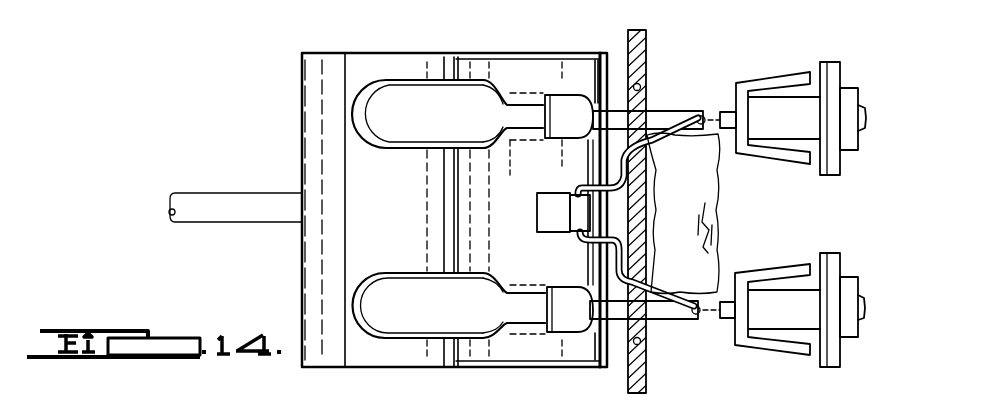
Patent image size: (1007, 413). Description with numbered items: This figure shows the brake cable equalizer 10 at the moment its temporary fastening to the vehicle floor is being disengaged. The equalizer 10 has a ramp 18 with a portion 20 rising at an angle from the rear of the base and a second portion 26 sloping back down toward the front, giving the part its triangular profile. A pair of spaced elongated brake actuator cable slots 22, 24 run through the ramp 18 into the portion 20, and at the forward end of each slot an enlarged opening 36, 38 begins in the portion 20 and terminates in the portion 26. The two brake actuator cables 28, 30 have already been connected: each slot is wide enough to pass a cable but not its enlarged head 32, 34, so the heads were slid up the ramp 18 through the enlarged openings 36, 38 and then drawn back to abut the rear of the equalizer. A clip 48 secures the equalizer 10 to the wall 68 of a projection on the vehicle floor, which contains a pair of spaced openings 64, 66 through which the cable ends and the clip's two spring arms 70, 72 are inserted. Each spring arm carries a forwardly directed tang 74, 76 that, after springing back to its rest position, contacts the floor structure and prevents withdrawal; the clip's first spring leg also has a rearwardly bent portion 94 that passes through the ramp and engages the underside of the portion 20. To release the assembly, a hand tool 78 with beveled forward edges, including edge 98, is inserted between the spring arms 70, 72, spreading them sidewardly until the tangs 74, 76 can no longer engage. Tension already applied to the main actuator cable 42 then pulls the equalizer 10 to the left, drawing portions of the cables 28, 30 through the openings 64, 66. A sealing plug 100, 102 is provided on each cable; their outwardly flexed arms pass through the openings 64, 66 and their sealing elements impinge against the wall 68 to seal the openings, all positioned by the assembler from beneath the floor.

The brake cable equalizer 10 is at (475, 42).
The ramp 18 is at (333, 50).
The ramp portion 20 is at (511, 65).
The elongated brake actuator cable slot 22 is at (567, 326).
The elongated brake actuator cable slot 24 is at (572, 108).
The second ramp portion 26 is at (385, 62).
The brake actuator cable 28 is at (695, 321).
The brake actuator cable 30 is at (657, 112).
The enlarged head 32 is at (518, 328).
The enlarged head 34 is at (512, 168).
The enlarged opening 36 is at (393, 274).
The enlarged opening 38 is at (405, 145).
The main actuator cable 42 is at (215, 195).
The clip 48 is at (576, 244).
The opening 64 is at (641, 85).
The opening 66 is at (641, 342).
The wall 68 is at (638, 44).
The spring arm 70 is at (682, 120).
The spring arm 72 is at (668, 316).
The tang 74 is at (643, 146).
The tang 76 is at (640, 285).
The tool 78 is at (726, 226).
The rearwardly bent portion 94 is at (598, 145).
The beveled forward edge 98 is at (650, 278).
The sealing plug 100 is at (781, 74).
The sealing plug 102 is at (778, 266).